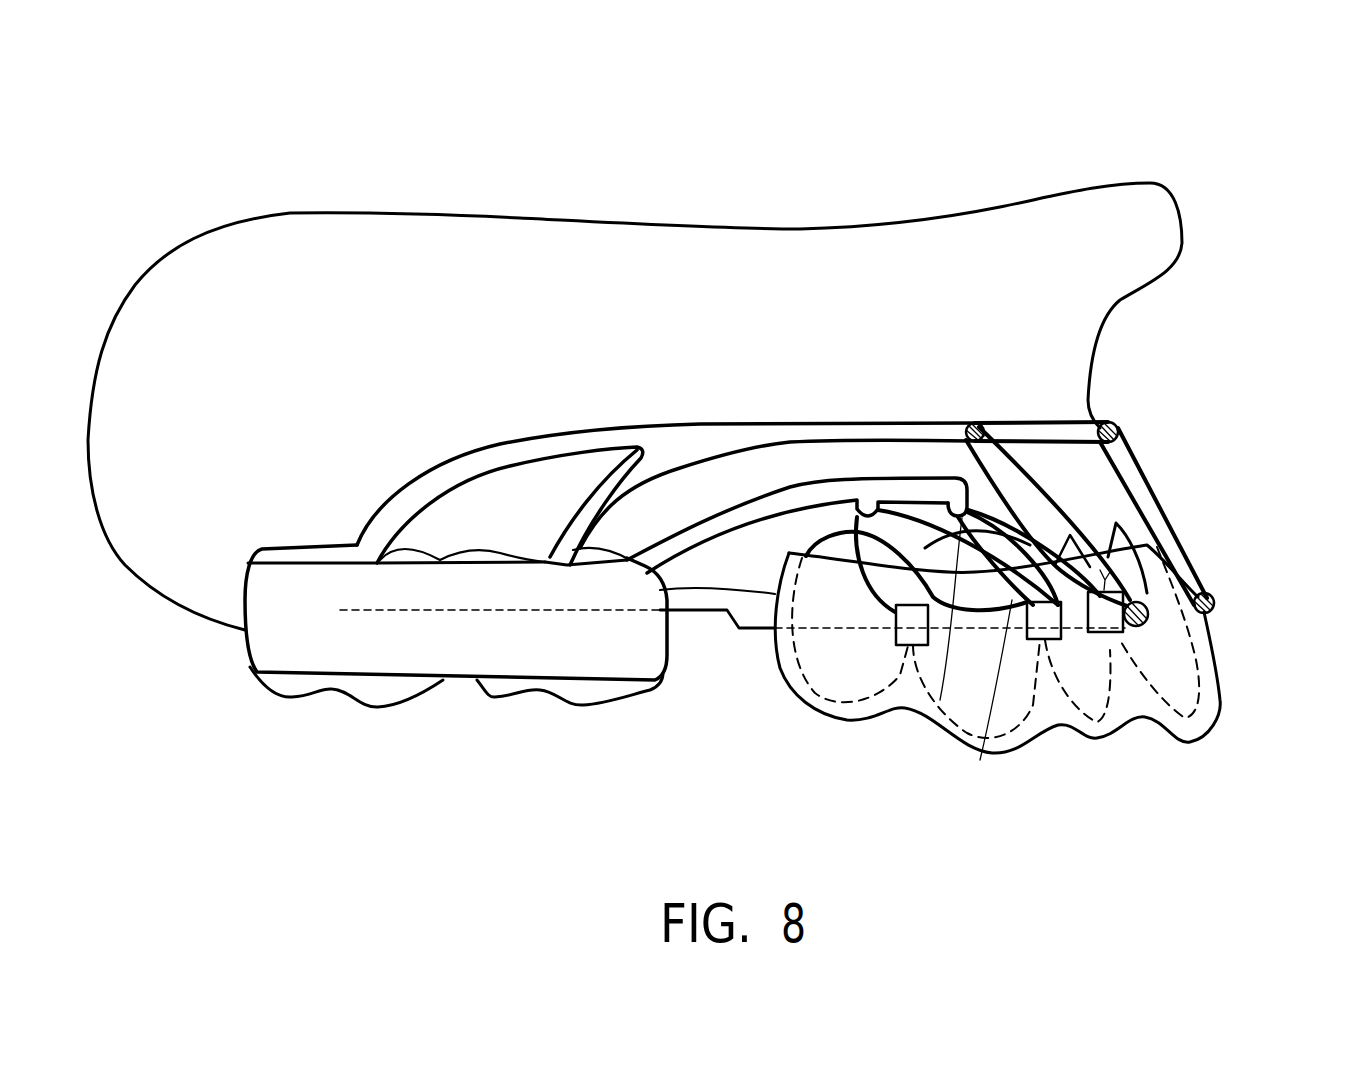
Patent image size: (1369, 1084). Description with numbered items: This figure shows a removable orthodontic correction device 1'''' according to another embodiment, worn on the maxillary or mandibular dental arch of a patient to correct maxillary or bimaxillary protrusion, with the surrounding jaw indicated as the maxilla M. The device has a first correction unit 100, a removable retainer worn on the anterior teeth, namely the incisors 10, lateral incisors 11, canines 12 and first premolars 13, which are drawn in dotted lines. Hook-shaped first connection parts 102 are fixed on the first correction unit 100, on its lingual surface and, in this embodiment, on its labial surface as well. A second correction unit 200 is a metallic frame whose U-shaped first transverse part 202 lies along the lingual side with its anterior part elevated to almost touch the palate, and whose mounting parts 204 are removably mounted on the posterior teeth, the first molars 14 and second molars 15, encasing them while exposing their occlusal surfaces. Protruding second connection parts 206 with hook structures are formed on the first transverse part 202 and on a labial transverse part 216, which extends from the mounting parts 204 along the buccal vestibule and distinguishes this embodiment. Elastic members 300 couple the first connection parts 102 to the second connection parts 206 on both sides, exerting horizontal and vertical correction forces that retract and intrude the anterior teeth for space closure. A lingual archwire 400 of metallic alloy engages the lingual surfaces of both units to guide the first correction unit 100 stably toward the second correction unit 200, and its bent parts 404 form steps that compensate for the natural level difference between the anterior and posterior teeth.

The removable orthodontic correction device 1'''' is at (119, 117).
The maxilla M is at (614, 272).
The first correction unit 100 is at (1211, 690).
The first connection parts 102 is at (905, 648).
The second correction unit 200 is at (244, 648).
The first transverse part 202 is at (712, 527).
The mounting parts 204 is at (300, 658).
The second connection parts 206 is at (955, 502).
The labial transverse part 216 is at (553, 440).
The elastic members 300 is at (853, 520).
The lingual archwire 400 is at (457, 609).
The bent parts 404 is at (730, 626).
The incisors 10 is at (1197, 730).
The lateral incisors 11 is at (1110, 725).
The canines 12 is at (970, 705).
The first premolars 13 is at (805, 702).
The first molars 14 is at (583, 693).
The second molars 15 is at (377, 692).